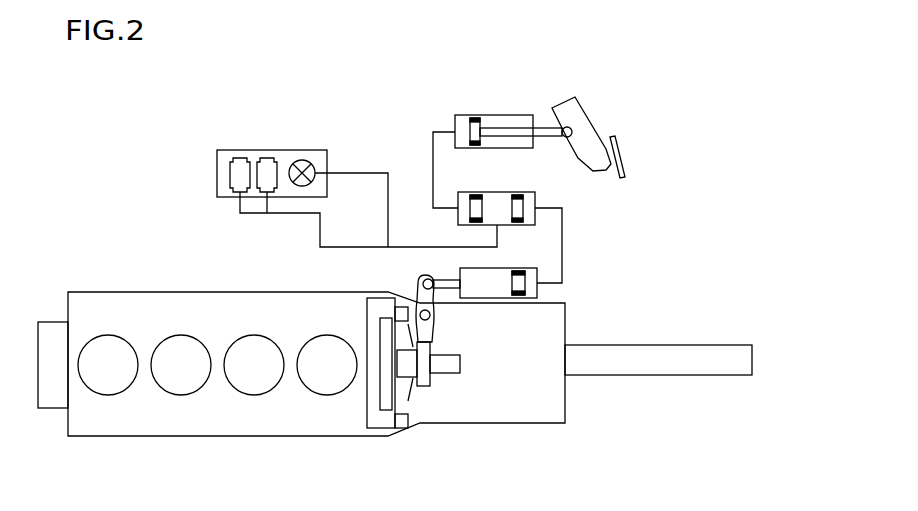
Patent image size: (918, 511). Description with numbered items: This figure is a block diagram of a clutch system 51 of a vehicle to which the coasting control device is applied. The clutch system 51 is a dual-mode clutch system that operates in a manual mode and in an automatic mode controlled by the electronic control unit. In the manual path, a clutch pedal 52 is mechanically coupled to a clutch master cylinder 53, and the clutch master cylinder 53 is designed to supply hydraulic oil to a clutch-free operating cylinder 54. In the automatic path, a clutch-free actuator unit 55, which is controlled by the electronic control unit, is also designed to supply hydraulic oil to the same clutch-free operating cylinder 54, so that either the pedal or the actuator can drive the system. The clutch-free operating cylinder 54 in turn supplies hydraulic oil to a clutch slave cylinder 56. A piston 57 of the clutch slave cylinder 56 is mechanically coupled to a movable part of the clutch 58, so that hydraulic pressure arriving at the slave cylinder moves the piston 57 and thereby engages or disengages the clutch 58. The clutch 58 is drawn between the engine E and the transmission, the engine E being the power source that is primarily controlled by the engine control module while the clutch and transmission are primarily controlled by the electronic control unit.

The clutch system 51 is at (203, 112).
The clutch pedal 52 is at (622, 152).
The clutch master cylinder 53 is at (456, 118).
The clutch-free operating cylinder 54 is at (537, 195).
The clutch-free actuator unit 55 is at (217, 175).
The clutch slave cylinder 56 is at (538, 288).
The piston 57 is at (449, 277).
The clutch 58 is at (416, 291).
The engine E is at (203, 437).